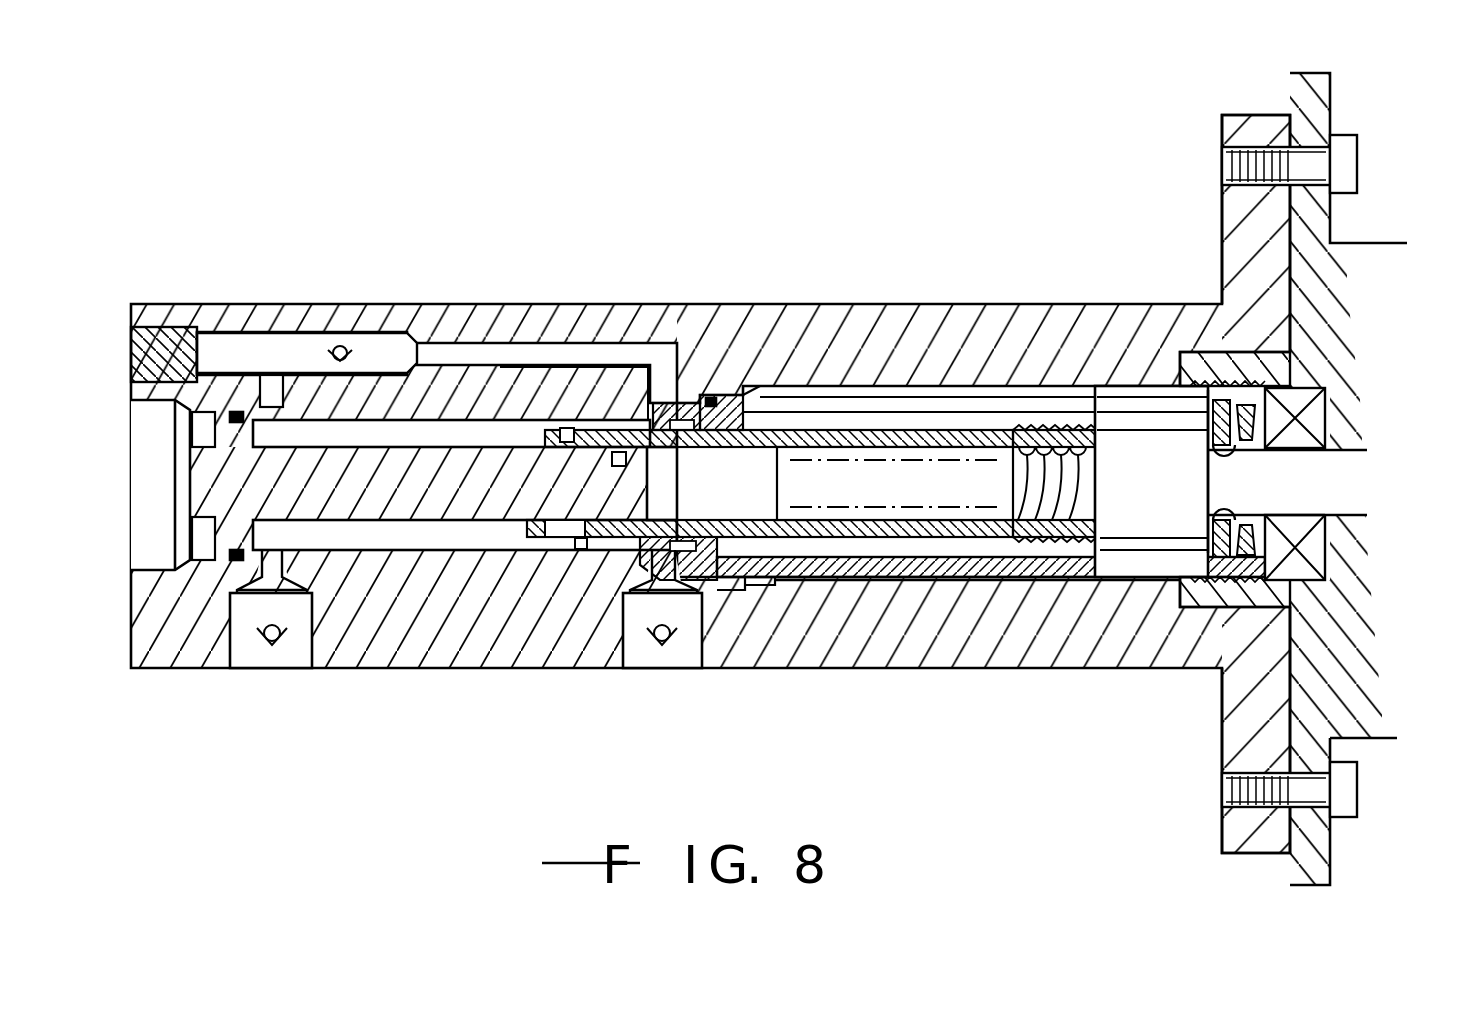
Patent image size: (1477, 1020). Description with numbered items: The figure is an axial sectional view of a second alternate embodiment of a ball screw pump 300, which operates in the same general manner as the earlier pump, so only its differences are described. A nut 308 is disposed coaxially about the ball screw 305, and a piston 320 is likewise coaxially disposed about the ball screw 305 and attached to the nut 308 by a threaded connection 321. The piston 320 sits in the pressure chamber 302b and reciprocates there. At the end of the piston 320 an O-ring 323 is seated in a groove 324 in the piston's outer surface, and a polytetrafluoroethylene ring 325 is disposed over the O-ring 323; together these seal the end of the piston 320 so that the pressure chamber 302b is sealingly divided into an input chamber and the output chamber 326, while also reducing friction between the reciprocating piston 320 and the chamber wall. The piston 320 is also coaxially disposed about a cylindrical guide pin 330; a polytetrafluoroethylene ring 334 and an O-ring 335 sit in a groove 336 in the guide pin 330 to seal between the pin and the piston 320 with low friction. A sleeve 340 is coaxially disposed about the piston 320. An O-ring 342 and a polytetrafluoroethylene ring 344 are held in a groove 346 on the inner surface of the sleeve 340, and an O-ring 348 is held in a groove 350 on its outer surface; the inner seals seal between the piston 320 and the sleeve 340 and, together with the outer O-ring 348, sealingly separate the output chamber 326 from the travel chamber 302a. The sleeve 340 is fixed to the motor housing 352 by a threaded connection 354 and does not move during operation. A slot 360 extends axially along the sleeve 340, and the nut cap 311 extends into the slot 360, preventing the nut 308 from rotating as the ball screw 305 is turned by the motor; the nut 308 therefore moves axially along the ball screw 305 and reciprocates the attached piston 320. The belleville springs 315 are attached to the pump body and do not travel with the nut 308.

The ball screw pump 300 is at (822, 248).
The travel chamber 302a is at (847, 423).
The pressure chamber 302b is at (383, 537).
The ball screw 305 is at (998, 503).
The nut 308 is at (1105, 547).
The nut cap 311 is at (1128, 420).
The belleville springs 315 is at (1263, 547).
The piston 320 is at (696, 448).
The threaded connection 321 is at (1057, 530).
The O-ring 323 is at (605, 410).
The groove 324 is at (535, 470).
The polytetrafluoroethylene ring 325 is at (428, 540).
The output chamber 326 is at (680, 402).
The guide pin 330 is at (367, 447).
The polytetrafluoroethylene ring 334 is at (620, 450).
The O-ring 335 is at (557, 522).
The groove 336 is at (612, 515).
The sleeve 340 is at (903, 582).
The O-ring 342 is at (664, 449).
The polytetrafluoroethylene ring 344 is at (692, 520).
The groove 346 is at (698, 400).
The O-ring 348 is at (717, 580).
The groove 350 is at (753, 565).
The motor housing 352 is at (1343, 287).
The threaded connection 354 is at (1200, 620).
The slot 360 is at (757, 390).